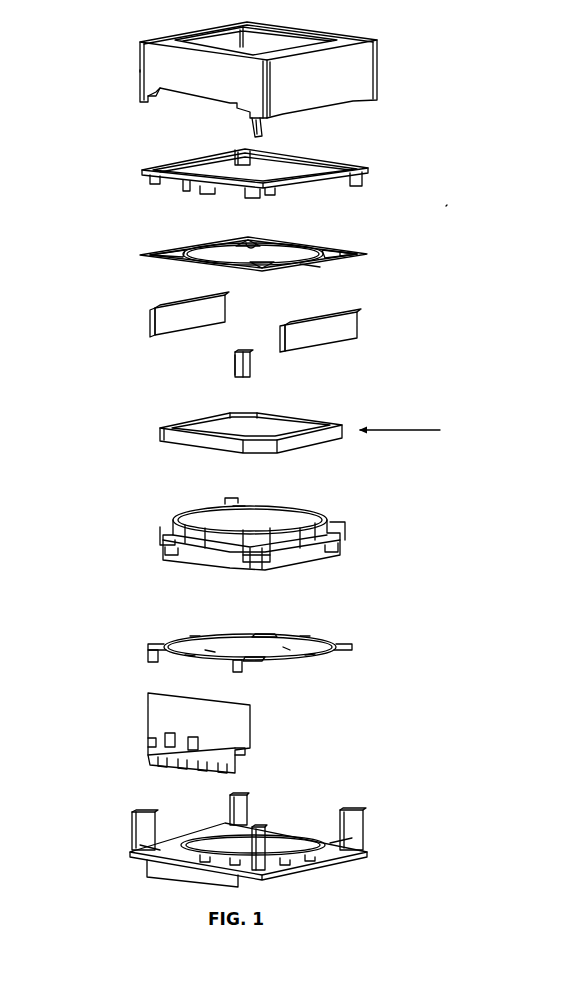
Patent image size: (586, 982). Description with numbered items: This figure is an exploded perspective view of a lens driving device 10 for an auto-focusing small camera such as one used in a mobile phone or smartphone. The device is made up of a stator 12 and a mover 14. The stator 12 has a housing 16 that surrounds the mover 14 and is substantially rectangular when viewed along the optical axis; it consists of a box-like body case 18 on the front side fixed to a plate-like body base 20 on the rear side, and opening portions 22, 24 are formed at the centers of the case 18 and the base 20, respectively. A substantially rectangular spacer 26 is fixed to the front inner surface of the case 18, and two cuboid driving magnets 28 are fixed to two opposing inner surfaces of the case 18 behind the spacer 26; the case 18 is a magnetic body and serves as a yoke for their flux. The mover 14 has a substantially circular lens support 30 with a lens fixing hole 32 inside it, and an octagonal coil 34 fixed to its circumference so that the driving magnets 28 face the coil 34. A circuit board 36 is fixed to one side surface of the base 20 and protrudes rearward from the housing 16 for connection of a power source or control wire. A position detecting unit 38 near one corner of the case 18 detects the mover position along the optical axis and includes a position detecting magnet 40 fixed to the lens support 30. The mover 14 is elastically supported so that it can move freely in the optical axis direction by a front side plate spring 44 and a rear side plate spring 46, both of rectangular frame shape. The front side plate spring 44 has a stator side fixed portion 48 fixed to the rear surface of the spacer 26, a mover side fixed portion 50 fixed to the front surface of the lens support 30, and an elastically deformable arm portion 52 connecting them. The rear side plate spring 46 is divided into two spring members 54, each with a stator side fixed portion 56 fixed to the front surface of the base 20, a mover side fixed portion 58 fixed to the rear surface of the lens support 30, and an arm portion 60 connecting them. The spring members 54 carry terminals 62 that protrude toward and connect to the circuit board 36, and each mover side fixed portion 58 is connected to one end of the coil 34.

The lens driving device 10 is at (448, 204).
The stator 12 is at (137, 73).
The mover 14 is at (273, 532).
The housing 16 is at (289, 71).
The case 18 is at (365, 86).
The base 20 is at (275, 837).
The opening portion 22 is at (297, 32).
The opening portion 24 is at (288, 840).
The spacer 26 is at (330, 162).
The driving magnets 28 is at (182, 305).
The lens support 30 is at (208, 557).
The lens fixing hole 32 is at (290, 523).
The coil 34 is at (185, 440).
The circuit board 36 is at (238, 725).
The position detecting unit 38 is at (233, 366).
The position detecting magnet 40 is at (253, 366).
The front side plate spring 44 is at (260, 258).
The rear side plate spring 46 is at (322, 587).
The stator side fixed portion 48 is at (320, 269).
The mover side fixed portion 50 is at (258, 243).
The arm portion 52 is at (345, 253).
The spring members 54 is at (245, 650).
The stator side fixed portion 56 is at (152, 645).
The mover side fixed portion 58 is at (207, 652).
The arm portion 60 is at (195, 635).
The terminals 62 is at (148, 661).